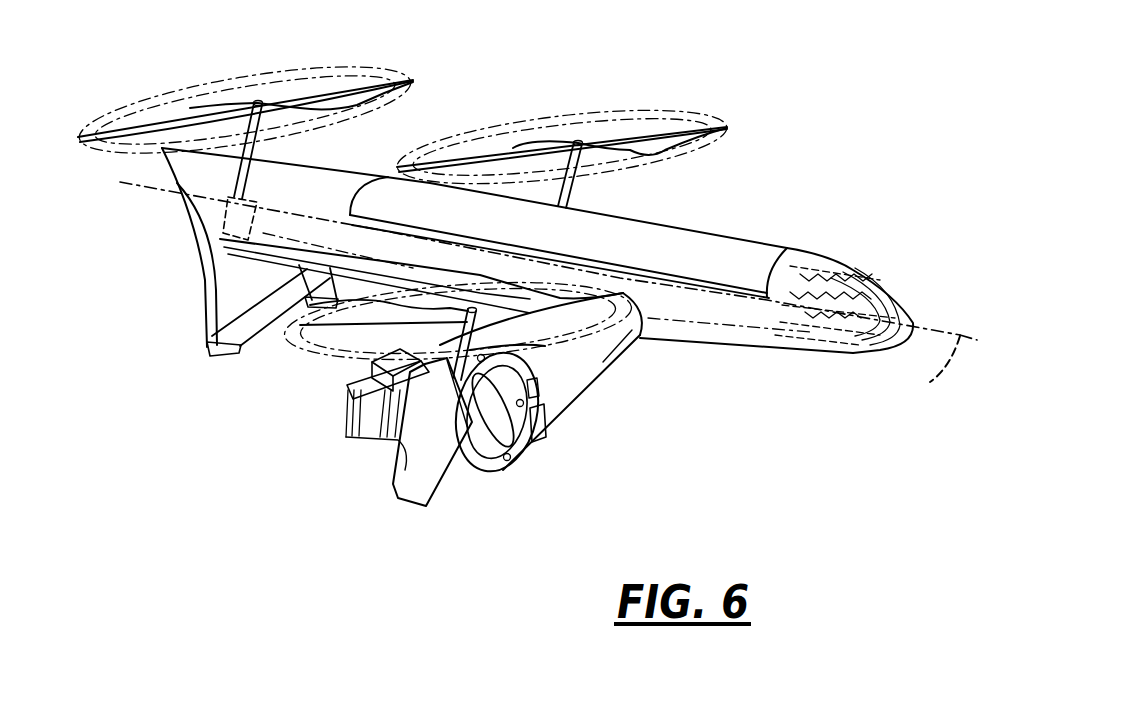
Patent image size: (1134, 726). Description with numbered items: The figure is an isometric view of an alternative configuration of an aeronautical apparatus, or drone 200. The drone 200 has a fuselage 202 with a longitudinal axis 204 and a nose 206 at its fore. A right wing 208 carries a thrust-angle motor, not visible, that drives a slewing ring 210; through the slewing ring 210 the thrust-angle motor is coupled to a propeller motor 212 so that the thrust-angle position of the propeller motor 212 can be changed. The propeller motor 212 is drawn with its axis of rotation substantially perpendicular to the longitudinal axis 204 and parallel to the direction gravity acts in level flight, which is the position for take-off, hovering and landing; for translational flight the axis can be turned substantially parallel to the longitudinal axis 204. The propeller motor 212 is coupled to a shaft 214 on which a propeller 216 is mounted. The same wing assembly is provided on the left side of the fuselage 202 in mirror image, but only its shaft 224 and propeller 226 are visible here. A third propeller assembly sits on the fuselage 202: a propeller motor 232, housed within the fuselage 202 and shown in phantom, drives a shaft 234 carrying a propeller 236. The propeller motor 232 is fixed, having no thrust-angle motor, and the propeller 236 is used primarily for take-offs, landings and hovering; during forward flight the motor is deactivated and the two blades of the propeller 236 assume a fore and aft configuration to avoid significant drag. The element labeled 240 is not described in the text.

The aeronautical apparatus (drone) 200 is at (762, 100).
The fuselage 202 is at (707, 240).
The longitudinal axis 204 is at (928, 367).
The nose 206 is at (822, 355).
The right wing 208 is at (563, 380).
The slewing ring 210 is at (493, 467).
The propeller motor 212 is at (453, 470).
The shaft 214 is at (545, 346).
The propeller 216 is at (332, 338).
The shaft 224 is at (587, 160).
The propeller 226 is at (513, 152).
The propeller motor 232 is at (223, 223).
The shaft 234 is at (254, 127).
The propeller 236 is at (197, 120).
The landing gear strut 240 is at (223, 313).